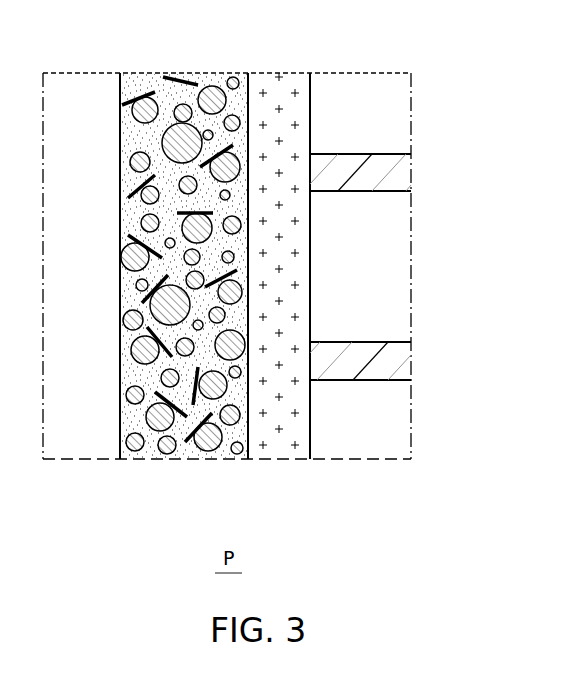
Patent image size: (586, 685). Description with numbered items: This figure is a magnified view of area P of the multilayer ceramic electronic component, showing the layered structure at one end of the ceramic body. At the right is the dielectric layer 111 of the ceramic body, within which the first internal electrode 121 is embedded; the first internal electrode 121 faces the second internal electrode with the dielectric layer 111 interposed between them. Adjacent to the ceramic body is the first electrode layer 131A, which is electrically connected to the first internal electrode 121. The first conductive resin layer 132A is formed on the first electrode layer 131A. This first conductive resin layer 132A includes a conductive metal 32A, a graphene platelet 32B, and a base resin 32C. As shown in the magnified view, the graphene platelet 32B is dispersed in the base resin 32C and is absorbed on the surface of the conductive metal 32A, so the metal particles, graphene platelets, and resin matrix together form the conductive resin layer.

The conductive metal 32A is at (140, 97).
The graphene platelet 32B is at (183, 78).
The base resin 32C is at (222, 77).
The first conductive resin layer 132A is at (183, 452).
The first electrode layer 131A is at (291, 440).
The first internal electrode 121 is at (381, 172).
The dielectric layer 111 is at (380, 267).